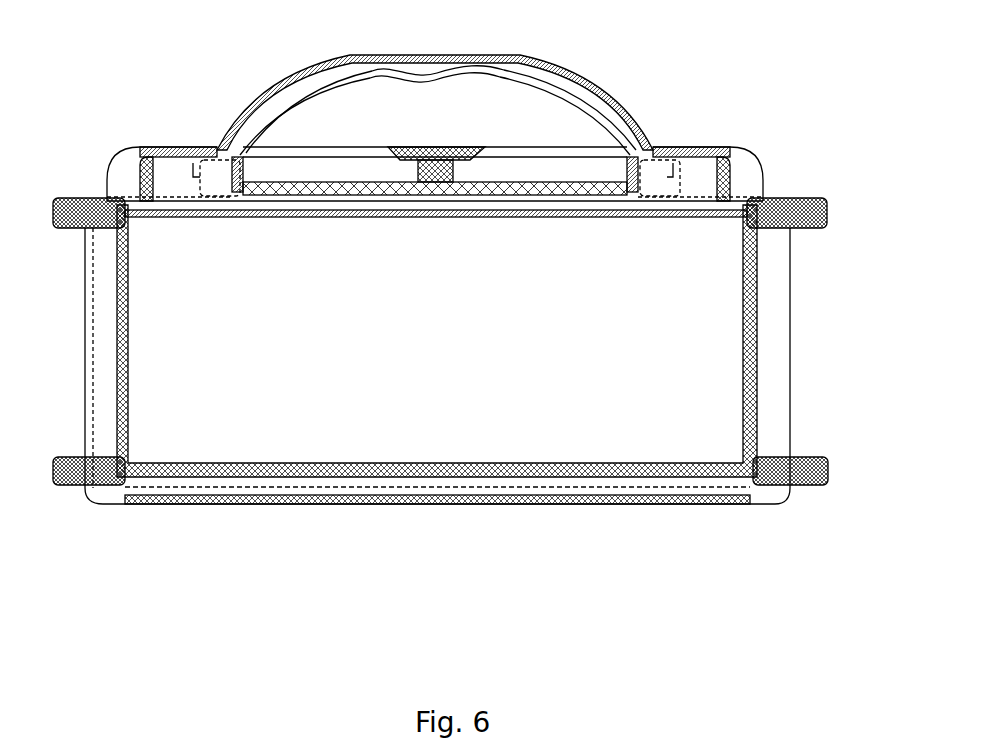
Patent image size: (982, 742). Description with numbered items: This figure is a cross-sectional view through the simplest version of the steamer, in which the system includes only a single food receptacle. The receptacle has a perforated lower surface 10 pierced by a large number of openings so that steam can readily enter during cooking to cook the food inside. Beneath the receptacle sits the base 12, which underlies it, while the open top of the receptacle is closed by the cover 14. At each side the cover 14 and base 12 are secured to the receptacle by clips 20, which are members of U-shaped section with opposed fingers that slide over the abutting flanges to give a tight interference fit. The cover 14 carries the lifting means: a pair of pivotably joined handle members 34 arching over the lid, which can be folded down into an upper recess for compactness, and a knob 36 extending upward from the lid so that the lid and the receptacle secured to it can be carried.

The lower surface 10 is at (397, 477).
The base 12 is at (307, 504).
The cover 14 is at (687, 147).
The clip 20 is at (812, 202).
The handle member 34 is at (565, 88).
The knob 36 is at (480, 147).